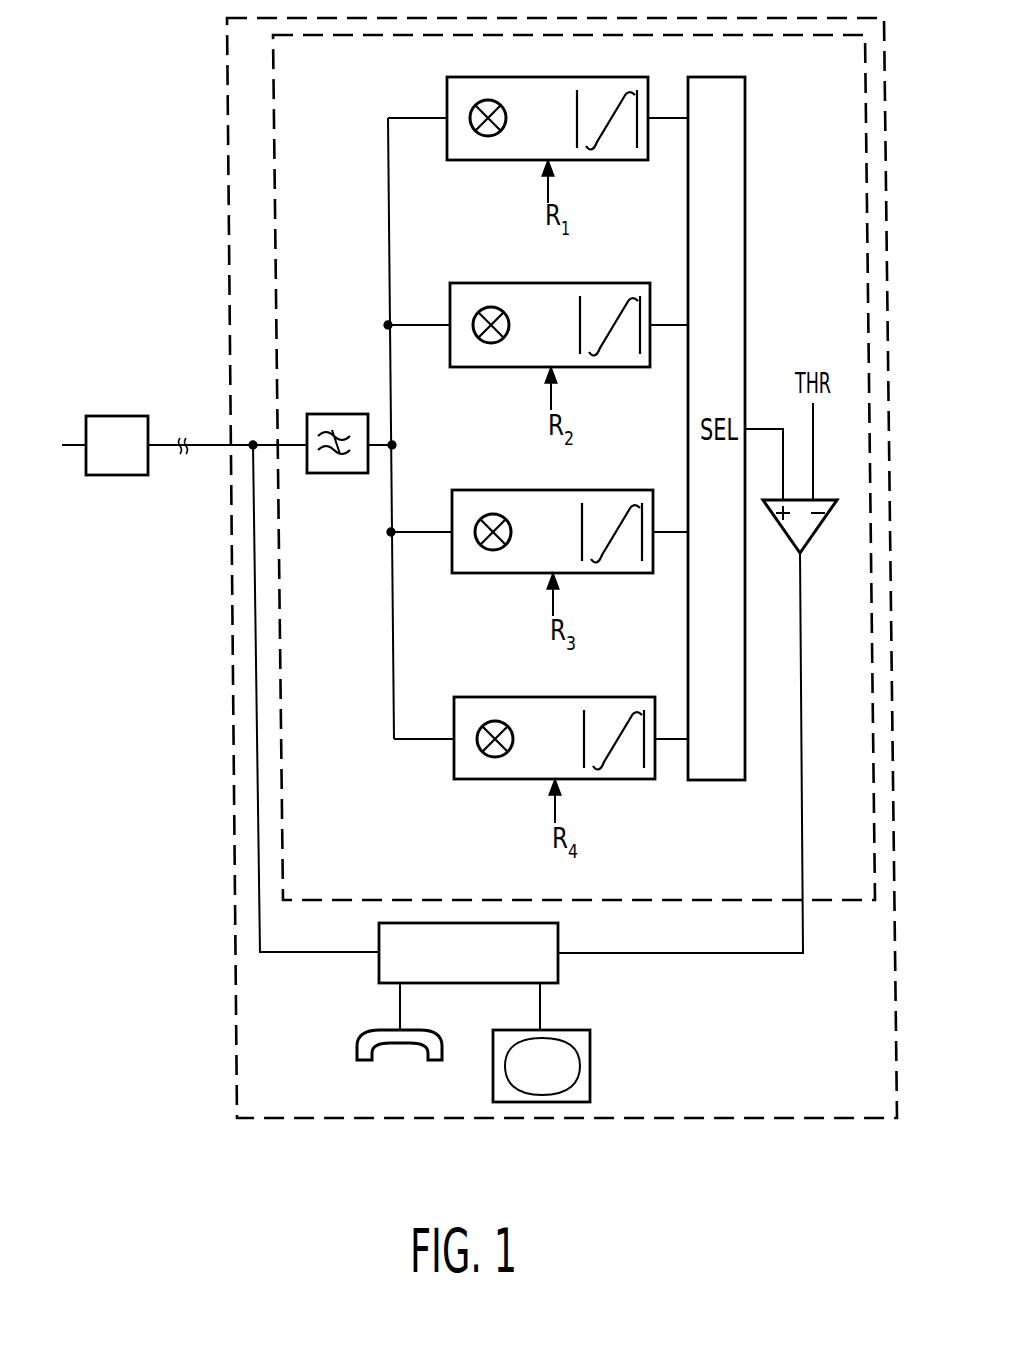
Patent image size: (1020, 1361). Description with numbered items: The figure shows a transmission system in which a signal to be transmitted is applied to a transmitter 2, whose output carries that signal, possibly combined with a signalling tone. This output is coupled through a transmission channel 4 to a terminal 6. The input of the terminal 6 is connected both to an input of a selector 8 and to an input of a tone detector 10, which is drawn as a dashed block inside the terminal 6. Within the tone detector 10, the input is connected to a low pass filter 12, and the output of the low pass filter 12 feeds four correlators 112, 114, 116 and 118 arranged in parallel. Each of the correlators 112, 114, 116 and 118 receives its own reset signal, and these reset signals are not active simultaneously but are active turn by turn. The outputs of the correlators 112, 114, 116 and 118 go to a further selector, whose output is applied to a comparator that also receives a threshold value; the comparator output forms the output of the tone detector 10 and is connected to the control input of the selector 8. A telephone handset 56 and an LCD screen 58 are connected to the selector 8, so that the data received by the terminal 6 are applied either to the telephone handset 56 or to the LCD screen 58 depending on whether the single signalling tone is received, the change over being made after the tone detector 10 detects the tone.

The transmitter 2 is at (118, 416).
The transmission channel 4 is at (164, 440).
The terminal 6 is at (228, 322).
The selector 8 is at (379, 937).
The tone detector 10 is at (280, 322).
The low pass filter 12 is at (335, 414).
The telephone handset 56 is at (358, 1047).
The LCD screen 58 is at (591, 1052).
The correlator 112 is at (478, 162).
The correlator 114 is at (473, 369).
The correlator 116 is at (476, 575).
The correlator 118 is at (478, 781).